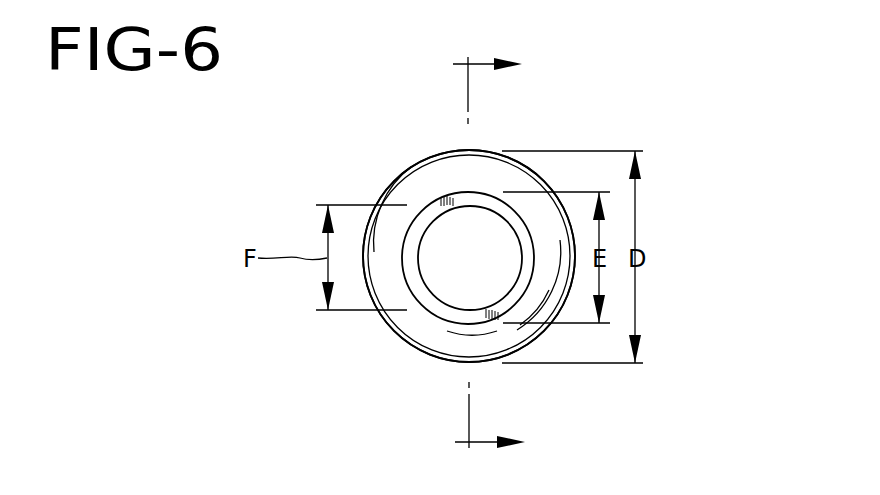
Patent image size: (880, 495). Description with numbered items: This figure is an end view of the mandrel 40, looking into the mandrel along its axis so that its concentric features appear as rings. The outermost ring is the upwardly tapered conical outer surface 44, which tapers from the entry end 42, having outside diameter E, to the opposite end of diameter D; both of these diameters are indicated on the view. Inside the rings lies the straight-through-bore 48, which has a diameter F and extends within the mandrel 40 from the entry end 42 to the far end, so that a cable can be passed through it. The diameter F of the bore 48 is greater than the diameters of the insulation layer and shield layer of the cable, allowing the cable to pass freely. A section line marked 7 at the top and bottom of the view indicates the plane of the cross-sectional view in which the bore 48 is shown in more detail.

The mandrel 40 is at (324, 359).
The entry end 42 is at (449, 313).
The upwardly tapered conical outer surface 44 is at (487, 151).
The straight-through-bore 48 is at (428, 236).
The section line 7- 7 is at (477, 256).